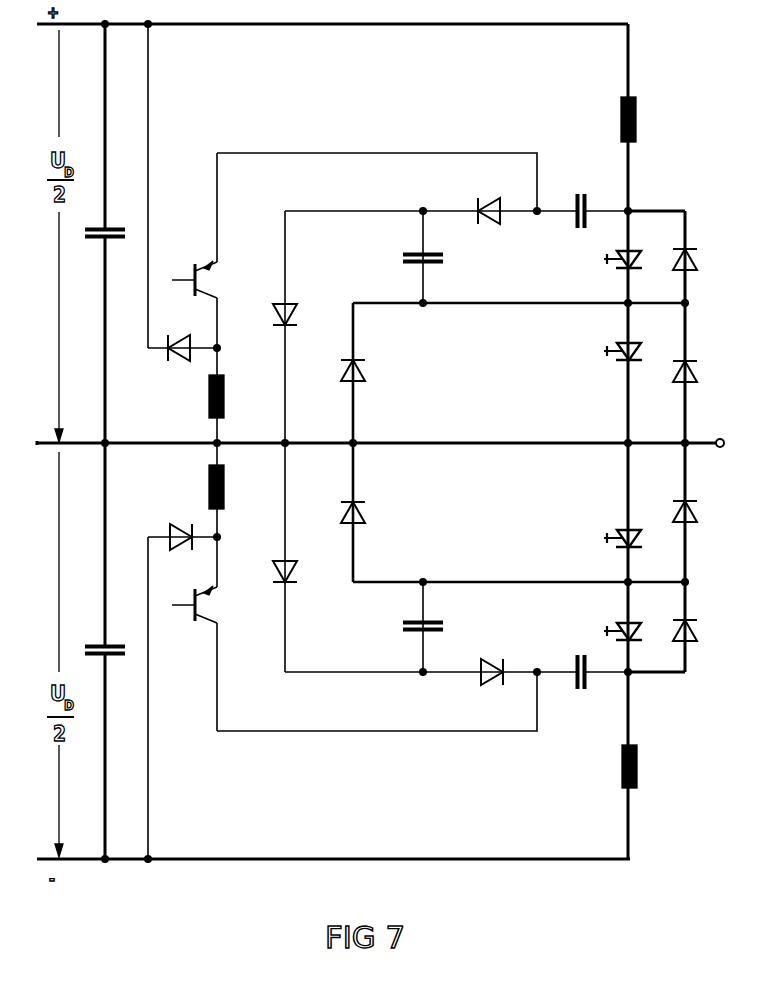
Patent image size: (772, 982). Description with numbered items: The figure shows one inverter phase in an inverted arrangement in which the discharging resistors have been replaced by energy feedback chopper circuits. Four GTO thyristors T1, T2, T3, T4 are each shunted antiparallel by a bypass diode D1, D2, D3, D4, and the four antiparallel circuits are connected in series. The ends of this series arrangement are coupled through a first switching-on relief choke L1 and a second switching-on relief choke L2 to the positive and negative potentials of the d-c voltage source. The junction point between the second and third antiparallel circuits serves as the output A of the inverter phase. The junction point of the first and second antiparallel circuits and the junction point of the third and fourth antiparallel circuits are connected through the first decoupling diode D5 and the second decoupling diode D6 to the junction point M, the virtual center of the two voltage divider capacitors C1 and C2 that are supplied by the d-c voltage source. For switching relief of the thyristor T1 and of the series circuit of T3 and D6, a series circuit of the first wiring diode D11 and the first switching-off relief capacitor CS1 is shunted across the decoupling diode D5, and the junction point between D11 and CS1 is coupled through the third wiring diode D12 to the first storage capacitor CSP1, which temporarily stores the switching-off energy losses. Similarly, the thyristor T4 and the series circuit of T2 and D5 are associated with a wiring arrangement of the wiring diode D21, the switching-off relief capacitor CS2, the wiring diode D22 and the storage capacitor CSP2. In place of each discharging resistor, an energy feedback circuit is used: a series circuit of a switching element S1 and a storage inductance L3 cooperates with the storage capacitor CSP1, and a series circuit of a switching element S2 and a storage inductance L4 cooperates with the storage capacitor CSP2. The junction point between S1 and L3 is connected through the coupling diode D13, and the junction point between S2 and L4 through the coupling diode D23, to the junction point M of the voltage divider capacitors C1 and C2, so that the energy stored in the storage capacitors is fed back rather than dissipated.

The voltage divider capacitor C1 is at (113, 227).
The voltage divider capacitor C2 is at (114, 646).
The switching element S1 is at (224, 275).
The switching element S2 is at (218, 609).
The coupling diode D13 is at (180, 362).
The coupling diode D23 is at (178, 525).
The storage inductance L3 is at (226, 398).
The storage inductance L4 is at (226, 488).
The first wiring diode D11 is at (293, 302).
The wiring diode D21 is at (299, 569).
The first decoupling diode D5 is at (366, 372).
The second decoupling diode D6 is at (368, 509).
The first switching-off relief capacitor CS1 is at (443, 263).
The switching-off relief capacitor CS2 is at (445, 632).
The third wiring diode D12 is at (485, 197).
The wiring diode D22 is at (486, 686).
The first storage capacitor CSP1 is at (571, 196).
The storage capacitor CSP2 is at (574, 694).
The first switching-on relief choke L1 is at (638, 118).
The switching-on relief choke L2 is at (639, 768).
The GTO thyristor T1 is at (638, 252).
The GTO thyristor T2 is at (636, 343).
The GTO thyristor T3 is at (636, 551).
The GTO thyristor T4 is at (636, 644).
The bypass diode D1 is at (690, 250).
The bypass diode D2 is at (694, 363).
The bypass diode D3 is at (695, 526).
The bypass diode D4 is at (695, 644).
The output A is at (719, 439).
The junction point M is at (42, 442).